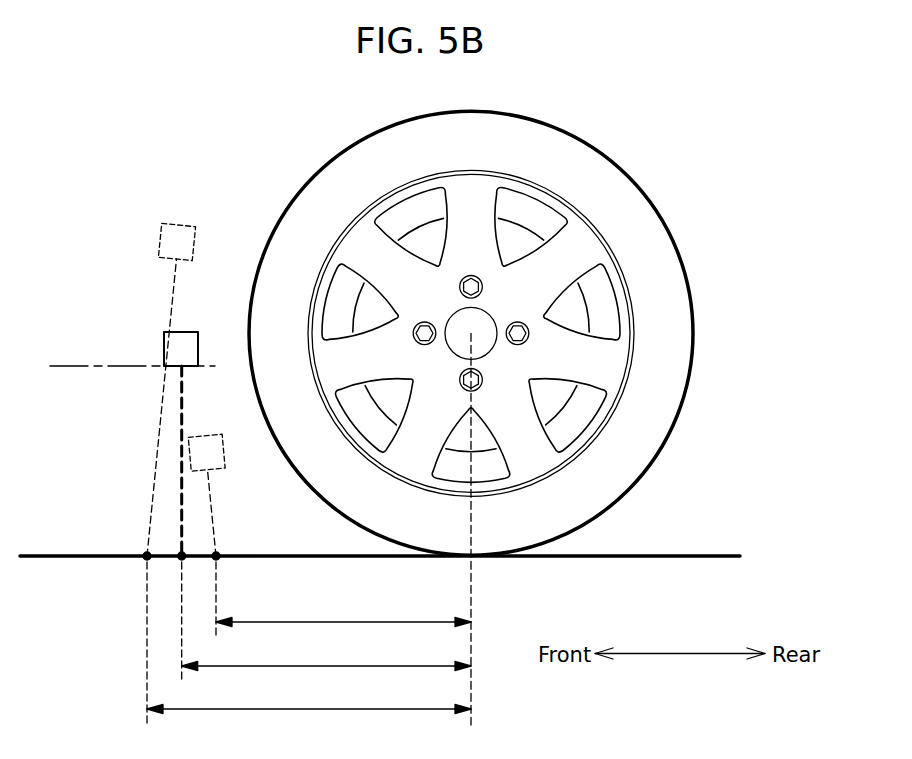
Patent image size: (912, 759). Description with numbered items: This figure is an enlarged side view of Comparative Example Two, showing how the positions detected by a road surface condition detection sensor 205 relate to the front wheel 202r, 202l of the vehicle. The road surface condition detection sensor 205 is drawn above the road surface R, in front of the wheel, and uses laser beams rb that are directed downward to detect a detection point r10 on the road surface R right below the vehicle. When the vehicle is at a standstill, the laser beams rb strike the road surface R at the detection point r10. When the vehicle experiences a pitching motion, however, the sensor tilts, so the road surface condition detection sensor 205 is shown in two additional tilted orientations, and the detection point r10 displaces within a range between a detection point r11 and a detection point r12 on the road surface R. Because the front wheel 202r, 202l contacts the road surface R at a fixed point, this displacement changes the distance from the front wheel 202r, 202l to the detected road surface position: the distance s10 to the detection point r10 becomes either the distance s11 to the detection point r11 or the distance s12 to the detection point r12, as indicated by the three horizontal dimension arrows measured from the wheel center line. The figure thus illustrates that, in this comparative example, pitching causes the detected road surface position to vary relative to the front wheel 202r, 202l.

The front wheel 202l is at (560, 333).
The front wheel 202r is at (688, 282).
The road surface condition detection sensor 205 is at (161, 237).
The road surface R is at (691, 555).
The laser beams rb is at (212, 500).
The detection point r10 is at (182, 572).
The detection point r11 is at (146, 558).
The detection point r12 is at (217, 558).
The distance s10 is at (326, 654).
The distance s11 is at (309, 697).
The distance s12 is at (343, 611).